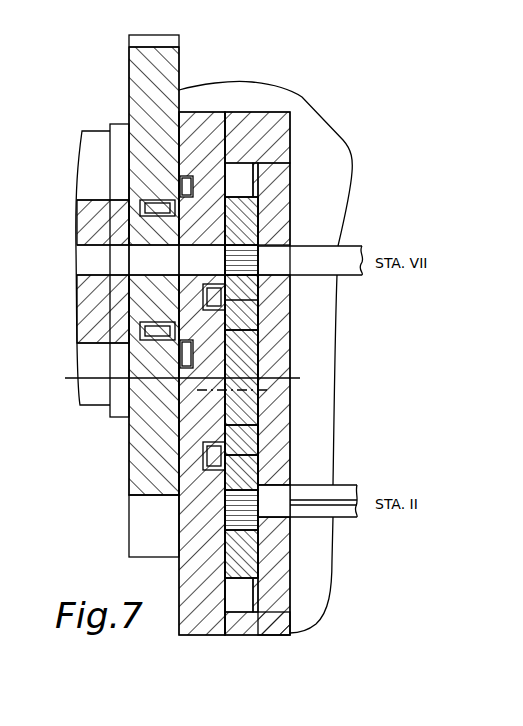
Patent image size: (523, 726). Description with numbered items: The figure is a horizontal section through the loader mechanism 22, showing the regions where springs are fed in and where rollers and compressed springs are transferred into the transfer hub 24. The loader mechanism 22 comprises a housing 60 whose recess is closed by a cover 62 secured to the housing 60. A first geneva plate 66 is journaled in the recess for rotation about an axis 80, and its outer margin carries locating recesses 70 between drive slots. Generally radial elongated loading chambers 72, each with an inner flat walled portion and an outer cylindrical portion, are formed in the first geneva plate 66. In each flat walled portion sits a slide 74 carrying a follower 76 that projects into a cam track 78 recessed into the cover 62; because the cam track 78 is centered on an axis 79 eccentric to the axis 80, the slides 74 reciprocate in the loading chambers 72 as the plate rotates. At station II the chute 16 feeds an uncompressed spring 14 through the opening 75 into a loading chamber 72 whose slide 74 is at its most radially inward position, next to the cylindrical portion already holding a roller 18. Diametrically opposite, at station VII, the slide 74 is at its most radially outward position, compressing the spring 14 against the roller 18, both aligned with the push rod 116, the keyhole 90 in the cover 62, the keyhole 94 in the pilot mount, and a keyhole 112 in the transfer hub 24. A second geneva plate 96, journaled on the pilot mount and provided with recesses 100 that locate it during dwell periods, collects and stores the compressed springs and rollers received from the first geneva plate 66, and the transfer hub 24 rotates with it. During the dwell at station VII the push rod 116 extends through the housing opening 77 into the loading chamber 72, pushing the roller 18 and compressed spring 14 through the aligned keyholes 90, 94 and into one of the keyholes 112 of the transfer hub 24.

The loader mechanism 22 is at (314, 84).
The transfer hub 24 is at (94, 143).
The keyholes 112 is at (94, 270).
The keyhole 94 is at (140, 255).
The second geneva plate 96 is at (137, 70).
The recesses 100 is at (142, 526).
The cover 62 is at (202, 118).
The housing 60 is at (256, 118).
The first geneva plate 66 is at (248, 222).
The locating recesses 70 is at (262, 183).
The opening 75 is at (270, 487).
The loading chambers 72 is at (232, 422).
The housing opening 77 is at (268, 249).
The slide 74 is at (252, 318).
The spring 14 is at (252, 292).
The cam track 78 is at (208, 292).
The follower 76 is at (206, 302).
The keyhole 90 is at (190, 212).
The roller 18 is at (222, 258).
The push rod 116 is at (352, 275).
The chute 16 is at (335, 510).
The axis 79 is at (313, 377).
The axis 80 is at (270, 390).